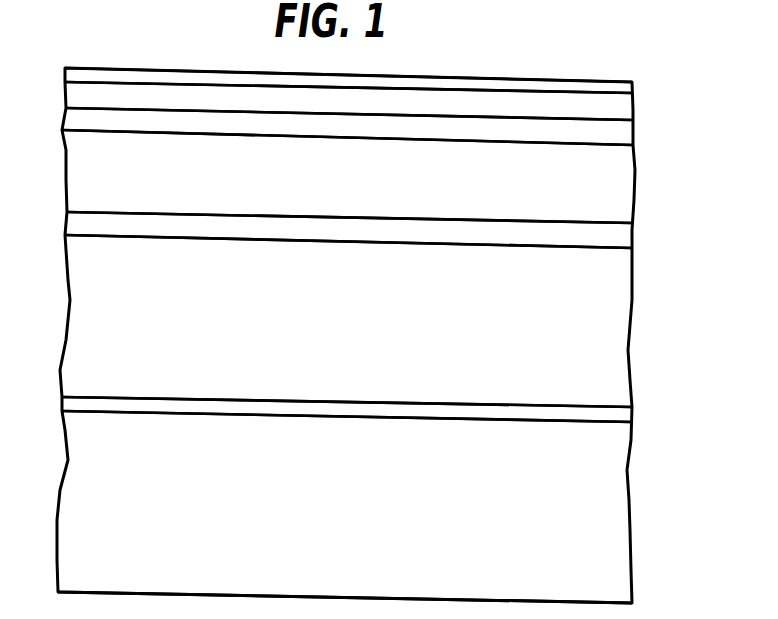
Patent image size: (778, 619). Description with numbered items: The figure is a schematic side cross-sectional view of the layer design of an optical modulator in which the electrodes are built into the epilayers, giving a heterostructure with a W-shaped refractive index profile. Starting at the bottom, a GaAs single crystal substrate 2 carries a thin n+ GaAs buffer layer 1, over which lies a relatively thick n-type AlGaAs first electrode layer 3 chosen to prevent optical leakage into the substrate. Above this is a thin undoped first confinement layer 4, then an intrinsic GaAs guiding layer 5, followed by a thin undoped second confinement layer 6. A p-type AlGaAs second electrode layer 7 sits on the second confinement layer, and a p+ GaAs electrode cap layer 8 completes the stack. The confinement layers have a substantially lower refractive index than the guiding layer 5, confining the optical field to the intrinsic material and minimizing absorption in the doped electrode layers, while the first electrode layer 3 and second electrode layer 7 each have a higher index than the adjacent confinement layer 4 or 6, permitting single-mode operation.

The buffer layer 1 is at (622, 417).
The substrate 2 is at (613, 508).
The first electrode layer 3 is at (617, 326).
The first confinement layer 4 is at (625, 238).
The guiding layer 5 is at (625, 193).
The second confinement layer 6 is at (628, 128).
The second electrode layer 7 is at (628, 107).
The electrode cap layer 8 is at (636, 84).